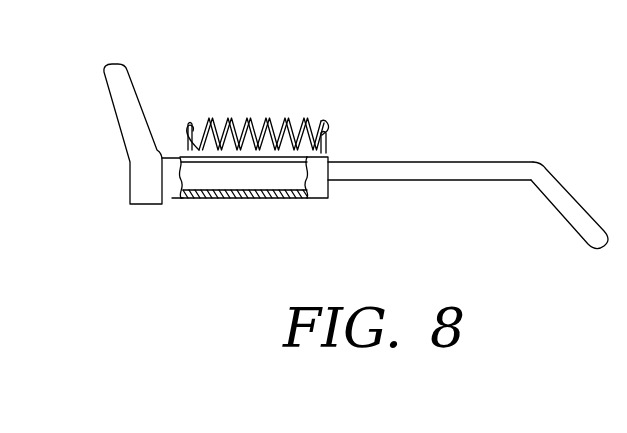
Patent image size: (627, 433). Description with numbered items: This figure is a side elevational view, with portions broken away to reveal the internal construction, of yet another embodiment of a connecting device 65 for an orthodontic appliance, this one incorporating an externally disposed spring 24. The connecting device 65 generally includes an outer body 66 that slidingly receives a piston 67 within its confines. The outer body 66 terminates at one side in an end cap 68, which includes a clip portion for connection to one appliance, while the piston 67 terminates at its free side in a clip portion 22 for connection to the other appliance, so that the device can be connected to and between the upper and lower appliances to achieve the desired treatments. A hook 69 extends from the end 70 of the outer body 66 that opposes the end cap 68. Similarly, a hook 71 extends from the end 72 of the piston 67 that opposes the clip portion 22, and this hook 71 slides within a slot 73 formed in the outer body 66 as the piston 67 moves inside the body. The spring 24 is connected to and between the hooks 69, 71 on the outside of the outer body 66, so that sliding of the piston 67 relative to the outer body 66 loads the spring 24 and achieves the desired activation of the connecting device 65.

The clip portion 22 is at (573, 215).
The spring 24 is at (303, 123).
The connecting device 65 is at (228, 212).
The outer body 66 is at (266, 199).
The piston 67 is at (495, 172).
The end cap 68 is at (128, 160).
The hook 69 is at (332, 142).
The end of the outer body 70 is at (320, 174).
The hook 71 is at (196, 148).
The end of the piston 72 is at (172, 190).
The slot 73 is at (234, 164).